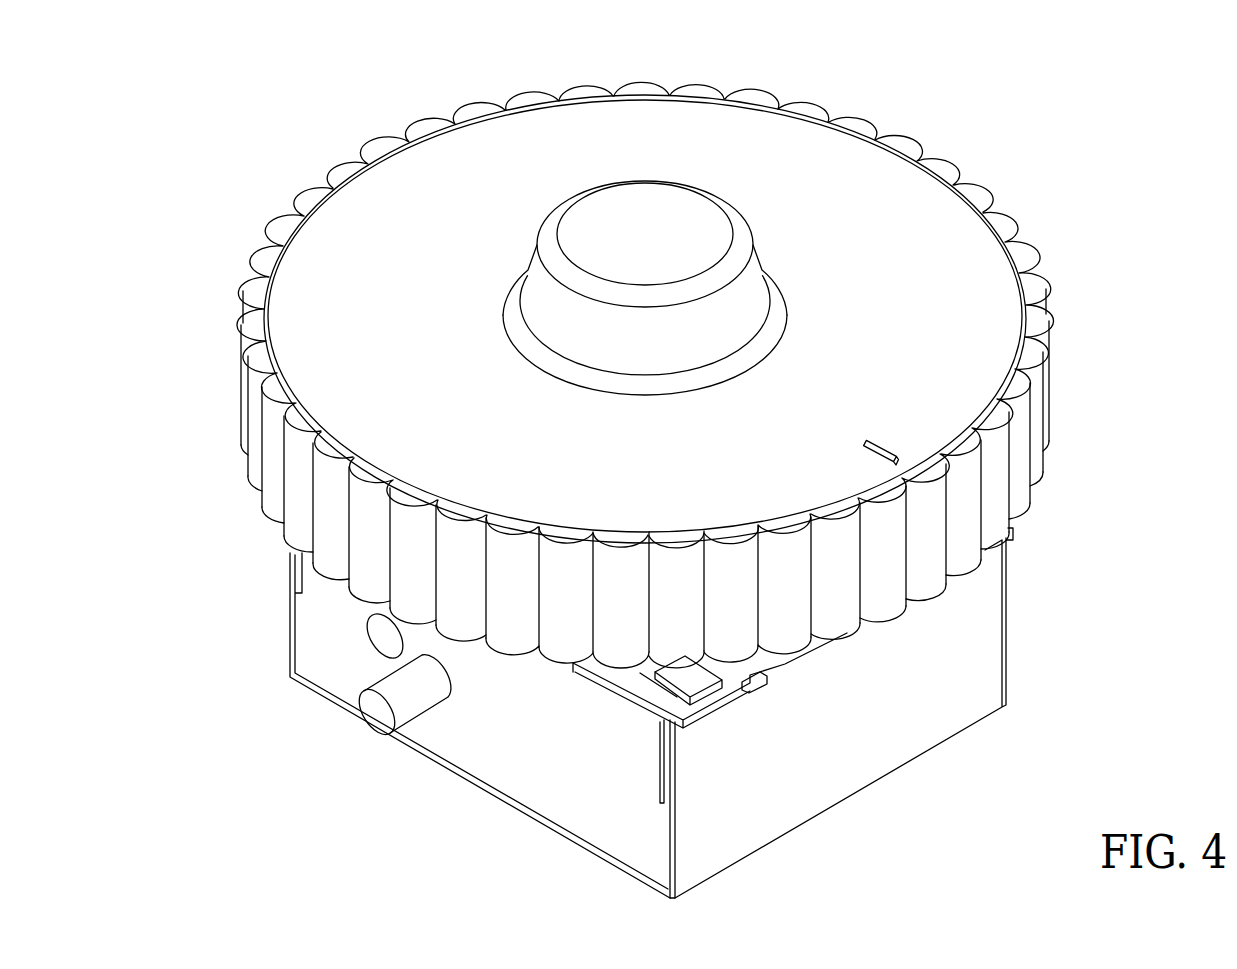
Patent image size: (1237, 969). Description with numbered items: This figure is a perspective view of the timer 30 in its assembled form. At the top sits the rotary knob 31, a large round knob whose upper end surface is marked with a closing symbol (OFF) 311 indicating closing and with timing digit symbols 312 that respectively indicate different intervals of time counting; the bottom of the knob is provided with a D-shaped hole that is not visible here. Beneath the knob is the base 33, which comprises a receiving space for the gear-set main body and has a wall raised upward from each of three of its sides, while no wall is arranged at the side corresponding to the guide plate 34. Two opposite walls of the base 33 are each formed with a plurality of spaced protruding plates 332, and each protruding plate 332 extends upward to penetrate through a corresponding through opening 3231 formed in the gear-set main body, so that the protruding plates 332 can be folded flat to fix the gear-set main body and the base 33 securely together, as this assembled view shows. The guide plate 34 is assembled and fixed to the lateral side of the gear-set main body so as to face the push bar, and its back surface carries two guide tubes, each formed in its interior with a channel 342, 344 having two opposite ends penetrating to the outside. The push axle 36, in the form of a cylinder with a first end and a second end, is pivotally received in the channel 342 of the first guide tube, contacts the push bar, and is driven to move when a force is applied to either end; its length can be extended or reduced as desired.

The timer 30 is at (183, 135).
The rotary knob 31 is at (812, 130).
The closing symbol (OFF) 311 is at (370, 456).
The timing digit symbols 312 is at (389, 158).
The base 33 is at (1005, 648).
The guide plate 34 is at (620, 838).
The channel 342 is at (446, 708).
The channel 344 is at (374, 641).
The push axle 36 is at (369, 729).
The protruding plates 332 is at (710, 668).
The through opening 3231 is at (709, 670).